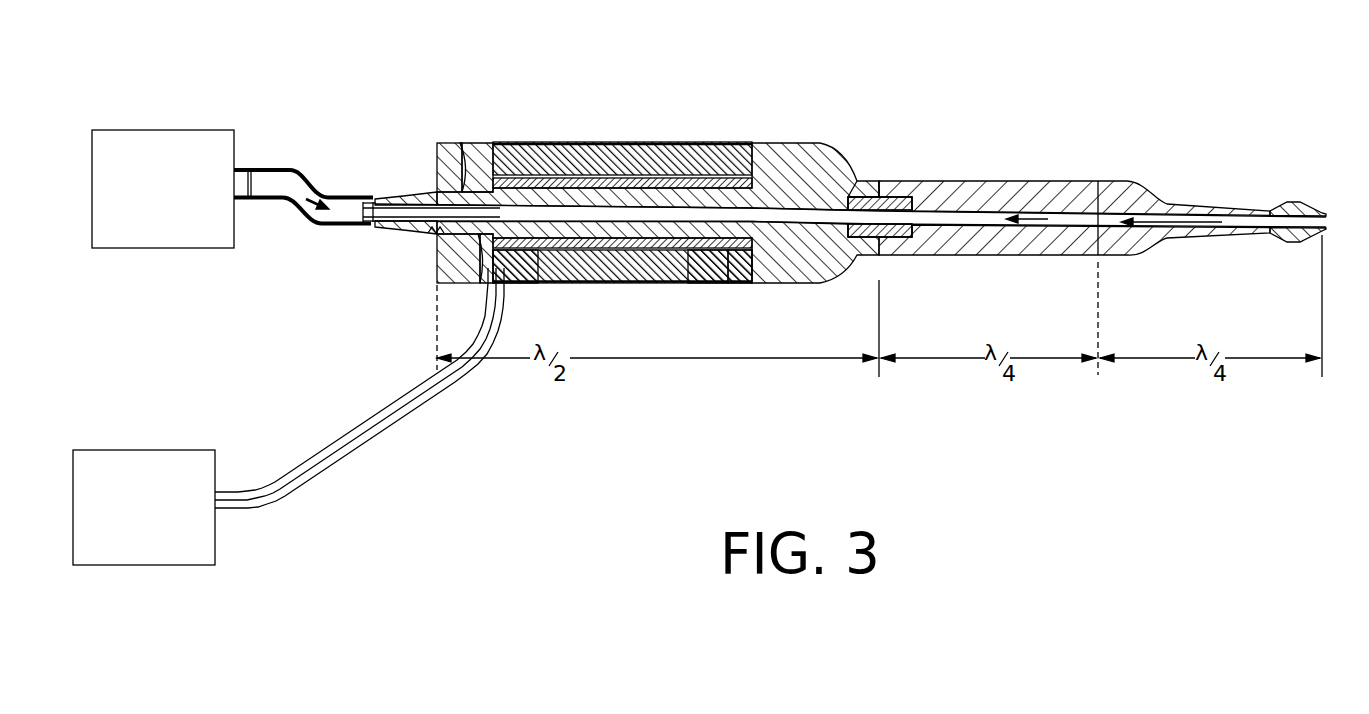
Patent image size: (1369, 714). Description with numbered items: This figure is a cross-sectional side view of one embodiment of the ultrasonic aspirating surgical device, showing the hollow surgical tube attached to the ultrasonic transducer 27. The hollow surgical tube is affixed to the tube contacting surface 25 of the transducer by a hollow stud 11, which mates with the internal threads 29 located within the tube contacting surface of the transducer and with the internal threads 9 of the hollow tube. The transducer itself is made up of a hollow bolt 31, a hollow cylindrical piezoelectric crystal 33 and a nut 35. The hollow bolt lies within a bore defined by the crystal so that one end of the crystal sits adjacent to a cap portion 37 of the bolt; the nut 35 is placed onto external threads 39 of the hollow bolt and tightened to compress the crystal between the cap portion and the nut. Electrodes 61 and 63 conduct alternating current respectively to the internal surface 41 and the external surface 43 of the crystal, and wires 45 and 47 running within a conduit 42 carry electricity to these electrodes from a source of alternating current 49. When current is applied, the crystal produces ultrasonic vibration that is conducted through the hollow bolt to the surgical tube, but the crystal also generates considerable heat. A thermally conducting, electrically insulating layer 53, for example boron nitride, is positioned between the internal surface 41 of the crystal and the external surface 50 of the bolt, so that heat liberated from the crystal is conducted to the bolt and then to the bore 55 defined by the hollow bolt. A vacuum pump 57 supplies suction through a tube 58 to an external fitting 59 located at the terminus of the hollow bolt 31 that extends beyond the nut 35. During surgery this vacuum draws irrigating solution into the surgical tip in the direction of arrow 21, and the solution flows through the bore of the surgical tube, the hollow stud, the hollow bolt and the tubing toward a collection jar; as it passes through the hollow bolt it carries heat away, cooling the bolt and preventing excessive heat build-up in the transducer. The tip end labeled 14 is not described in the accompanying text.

The internal threads of the hollow tube 9 is at (870, 197).
The hollow stud 11 is at (868, 197).
The horn tip 14 is at (1304, 207).
The arrow 21 is at (1018, 181).
The tube contacting surface 25 is at (892, 197).
The ultrasonic transducer 27 is at (634, 190).
The internal threads 29 is at (850, 185).
The hollow bolt 31 is at (543, 200).
The hollow cylindrical piezoelectric crystal 33 is at (675, 160).
The nut 35 is at (477, 142).
The cap portion 37 is at (773, 163).
The external threads 39 is at (453, 142).
The internal surface of the piezoelectric crystal 41 is at (581, 250).
The conduit 42 is at (385, 428).
The external surface of the piezoelectric crystal 43 is at (623, 283).
The wire 45 is at (486, 334).
The wire 47 is at (455, 374).
The source of alternating current 49 is at (180, 450).
The external surface of the bolt 50 is at (725, 250).
The thermally conducting electrically insulating layer 53 is at (678, 248).
The bore 55 is at (432, 233).
The vacuum pump 57 is at (197, 130).
The tube 58 is at (300, 171).
The external fitting 59 is at (418, 197).
The electrode 61 is at (486, 270).
The electrode 63 is at (525, 283).